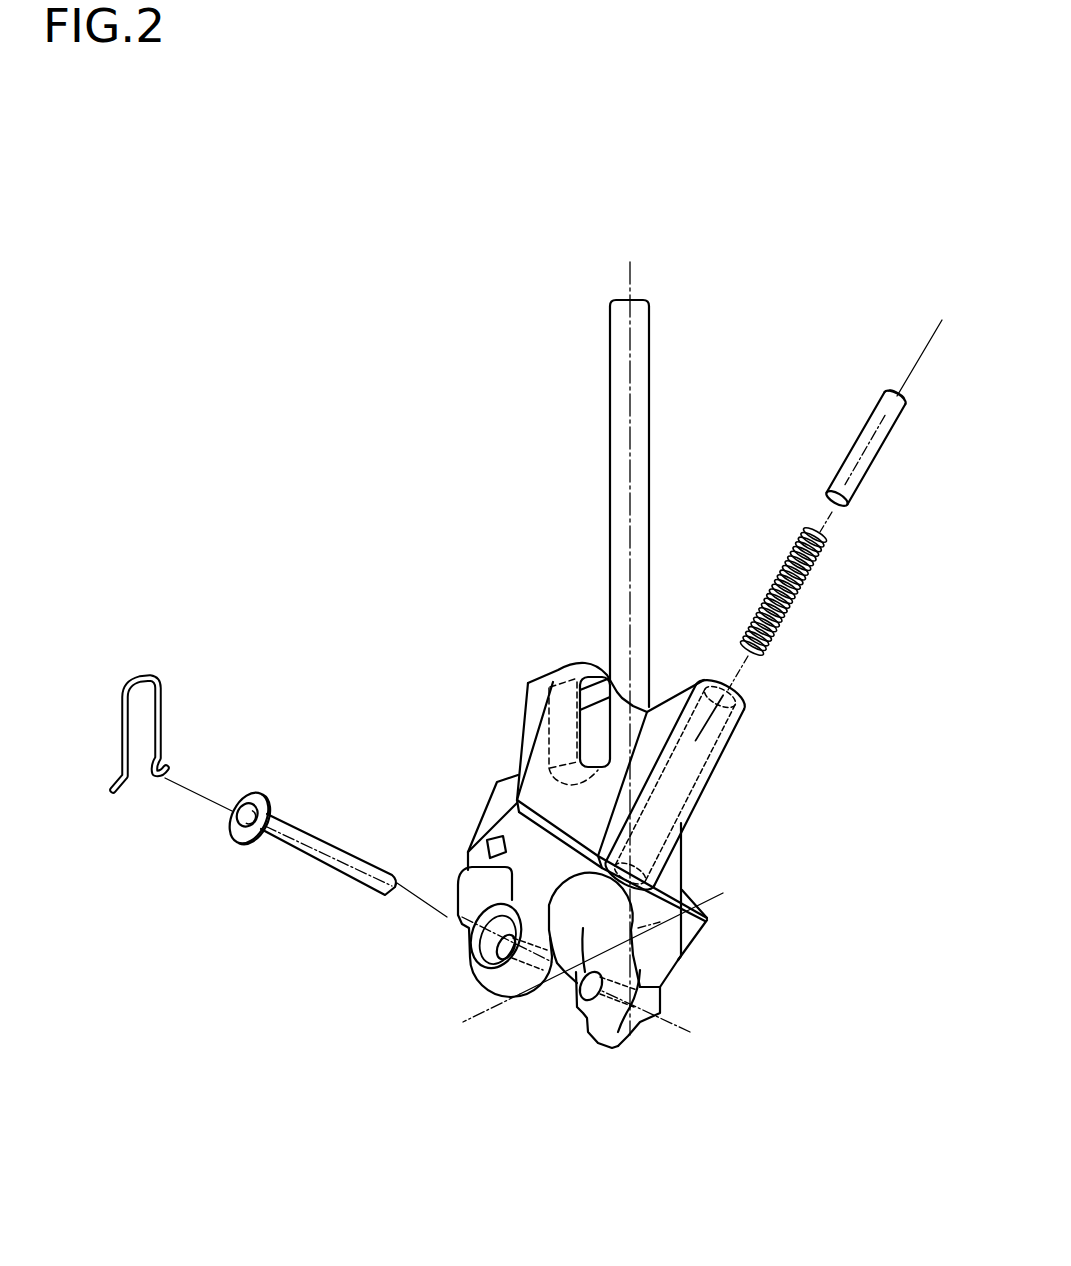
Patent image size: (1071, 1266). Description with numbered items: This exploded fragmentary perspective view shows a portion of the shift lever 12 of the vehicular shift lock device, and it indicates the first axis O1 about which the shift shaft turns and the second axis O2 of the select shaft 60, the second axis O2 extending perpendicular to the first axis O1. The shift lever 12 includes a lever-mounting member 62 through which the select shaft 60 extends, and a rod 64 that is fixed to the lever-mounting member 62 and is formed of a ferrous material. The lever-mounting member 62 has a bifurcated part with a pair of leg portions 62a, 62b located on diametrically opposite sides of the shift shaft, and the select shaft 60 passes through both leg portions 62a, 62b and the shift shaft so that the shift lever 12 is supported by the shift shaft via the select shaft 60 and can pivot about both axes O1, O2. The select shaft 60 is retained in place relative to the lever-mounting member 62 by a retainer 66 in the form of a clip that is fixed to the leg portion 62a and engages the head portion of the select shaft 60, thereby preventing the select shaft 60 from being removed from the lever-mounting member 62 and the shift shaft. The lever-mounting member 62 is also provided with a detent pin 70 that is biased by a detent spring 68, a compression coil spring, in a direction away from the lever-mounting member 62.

The shift lever 12 is at (536, 304).
The select shaft 60 is at (304, 852).
The lever-mounting member 62 is at (509, 687).
The leg portion 62a is at (495, 973).
The leg portion 62b is at (620, 1045).
The rod 64 is at (640, 447).
The retainer 66 is at (157, 717).
The detent spring 68 is at (792, 610).
The detent pin 70 is at (867, 433).
The first axis O1 is at (612, 950).
The second axis O2 is at (664, 1023).